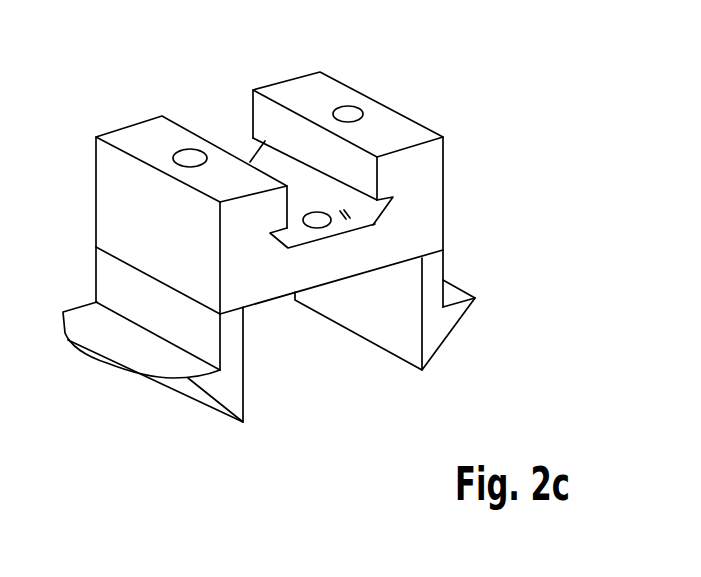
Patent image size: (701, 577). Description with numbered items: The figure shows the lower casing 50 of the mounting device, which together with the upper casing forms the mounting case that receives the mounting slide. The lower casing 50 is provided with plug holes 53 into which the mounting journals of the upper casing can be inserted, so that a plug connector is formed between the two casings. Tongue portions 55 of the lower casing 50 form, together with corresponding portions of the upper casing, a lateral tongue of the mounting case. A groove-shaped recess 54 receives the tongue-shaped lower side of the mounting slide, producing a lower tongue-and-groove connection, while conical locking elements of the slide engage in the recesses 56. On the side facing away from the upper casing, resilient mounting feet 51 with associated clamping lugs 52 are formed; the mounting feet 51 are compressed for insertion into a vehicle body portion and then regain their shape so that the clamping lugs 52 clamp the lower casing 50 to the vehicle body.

The lower casing 50 is at (453, 95).
The mounting feet 51 is at (244, 408).
The clamping lugs 52 is at (77, 318).
The plug holes 53 is at (348, 110).
The groove-shaped recess 54 is at (352, 224).
The tongue portions 55 is at (262, 114).
The recesses 56 is at (318, 220).